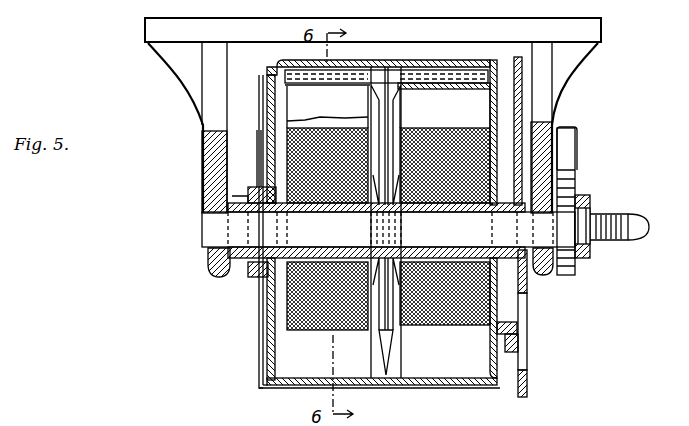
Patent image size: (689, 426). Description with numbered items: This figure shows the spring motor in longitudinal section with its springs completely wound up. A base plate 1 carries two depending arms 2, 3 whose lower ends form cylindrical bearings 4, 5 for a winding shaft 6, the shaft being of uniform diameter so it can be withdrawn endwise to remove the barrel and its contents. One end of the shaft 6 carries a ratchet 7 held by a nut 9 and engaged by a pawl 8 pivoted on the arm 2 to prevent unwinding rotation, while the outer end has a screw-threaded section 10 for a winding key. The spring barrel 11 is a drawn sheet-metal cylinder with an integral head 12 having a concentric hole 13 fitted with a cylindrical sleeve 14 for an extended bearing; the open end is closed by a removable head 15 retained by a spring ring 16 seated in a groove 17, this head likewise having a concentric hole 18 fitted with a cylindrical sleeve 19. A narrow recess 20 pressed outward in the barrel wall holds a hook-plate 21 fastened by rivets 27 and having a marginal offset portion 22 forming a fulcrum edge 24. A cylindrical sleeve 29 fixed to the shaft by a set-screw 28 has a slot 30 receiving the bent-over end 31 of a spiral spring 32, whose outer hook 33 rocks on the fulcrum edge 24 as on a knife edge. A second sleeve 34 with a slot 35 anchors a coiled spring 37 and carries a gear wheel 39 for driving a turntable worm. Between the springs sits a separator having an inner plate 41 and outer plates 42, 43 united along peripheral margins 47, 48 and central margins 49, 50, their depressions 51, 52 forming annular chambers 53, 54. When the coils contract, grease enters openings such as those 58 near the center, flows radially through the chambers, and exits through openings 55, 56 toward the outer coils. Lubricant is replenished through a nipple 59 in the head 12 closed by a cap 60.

The base plate 1 is at (373, 31).
The arm 2 is at (540, 92).
The arm 3 is at (213, 94).
The cylindrical bearing 4 is at (543, 280).
The cylindrical bearing 5 is at (240, 278).
The winding shaft 6 is at (220, 230).
The ratchet 7 is at (576, 276).
The pawl 8 is at (577, 132).
The nut 9 is at (584, 200).
The screw-threaded section 10 is at (612, 216).
The spring barrel 11 is at (466, 386).
The head 12 is at (505, 375).
The concentric hole 13 is at (516, 170).
The cylindrical sleeve 14 is at (537, 278).
The removable head 15 is at (262, 345).
The spring ring 16 is at (265, 375).
The groove 17 is at (261, 389).
The concentric hole 18 is at (252, 227).
The cylindrical sleeve 19 is at (250, 275).
The recess 20 is at (376, 64).
The hook-plate 21 is at (475, 57).
The marginal offset portion 22 is at (442, 60).
The fulcrum edge 24 is at (396, 69).
The rivets 27 is at (322, 60).
The set-screw 28 is at (232, 196).
The cylindrical sleeve 29 is at (212, 268).
The slot 30 is at (258, 187).
The bent-over end 31 is at (321, 205).
The spiral spring 32 is at (288, 320).
The hook 33 is at (297, 87).
The sleeve 34 is at (472, 245).
The slot 35 is at (415, 246).
The coiled spring 37 is at (500, 332).
The gear wheel 39 is at (528, 388).
The inner plate 41 is at (412, 318).
The outer plate 42 is at (404, 355).
The outer plate 43 is at (378, 360).
The peripheral margin 47 is at (398, 380).
The peripheral margin 48 is at (388, 382).
The central margin 49 is at (415, 205).
The central margin 50 is at (372, 222).
The depression 51 is at (404, 338).
The depression 52 is at (378, 340).
The annular chamber 53 is at (404, 118).
The annular chamber 54 is at (327, 123).
The openings 55 is at (410, 390).
The openings 56 is at (378, 380).
The openings 58 is at (372, 240).
The nipple 59 is at (498, 345).
The cap 60 is at (520, 348).